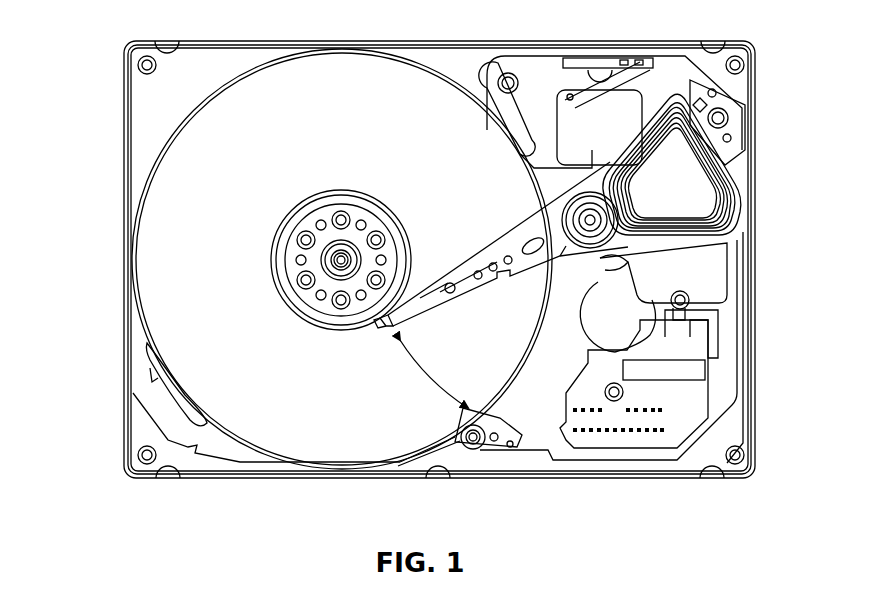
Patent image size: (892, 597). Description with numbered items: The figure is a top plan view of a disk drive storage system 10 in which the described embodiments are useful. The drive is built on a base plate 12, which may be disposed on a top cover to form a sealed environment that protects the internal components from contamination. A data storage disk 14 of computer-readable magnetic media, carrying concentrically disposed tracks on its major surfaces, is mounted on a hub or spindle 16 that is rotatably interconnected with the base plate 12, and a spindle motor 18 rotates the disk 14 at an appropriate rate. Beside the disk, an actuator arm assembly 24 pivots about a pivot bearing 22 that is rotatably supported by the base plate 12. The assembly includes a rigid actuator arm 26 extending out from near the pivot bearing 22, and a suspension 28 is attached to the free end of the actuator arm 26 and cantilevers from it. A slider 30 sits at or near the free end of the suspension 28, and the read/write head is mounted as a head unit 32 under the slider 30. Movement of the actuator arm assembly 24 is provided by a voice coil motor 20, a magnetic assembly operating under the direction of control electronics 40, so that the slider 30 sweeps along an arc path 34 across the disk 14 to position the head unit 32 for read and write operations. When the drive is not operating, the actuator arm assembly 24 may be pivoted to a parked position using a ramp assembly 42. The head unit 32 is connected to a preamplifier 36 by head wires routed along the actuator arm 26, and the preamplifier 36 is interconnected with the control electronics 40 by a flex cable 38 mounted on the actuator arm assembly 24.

The disk drive storage system 10 is at (110, 98).
The base plate 12 is at (262, 40).
The data storage disk 14 is at (352, 83).
The spindle 16 is at (354, 194).
The spindle motor 18 is at (325, 245).
The voice coil motor 20 is at (687, 183).
The pivot bearing 22 is at (603, 215).
The actuator arm assembly 24 is at (520, 232).
The actuator arm 26 is at (487, 287).
The suspension 28 is at (423, 287).
The slider 30 is at (403, 318).
The head unit 32 is at (383, 323).
The arc path 34 is at (410, 398).
The preamplifier 36 is at (628, 264).
The flex cable 38 is at (627, 350).
The control electronics 40 is at (623, 440).
The ramp assembly 42 is at (496, 447).